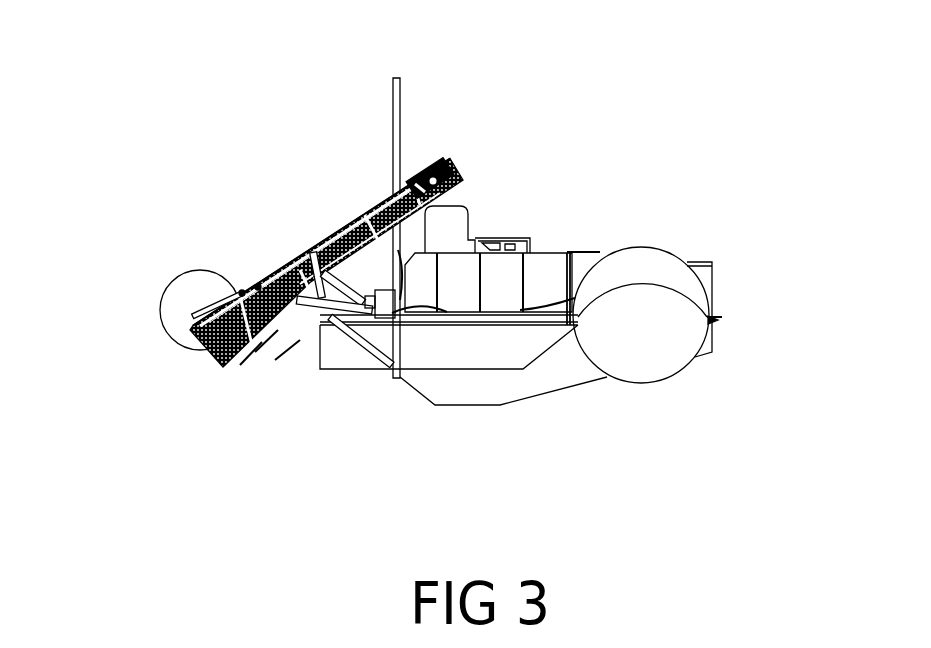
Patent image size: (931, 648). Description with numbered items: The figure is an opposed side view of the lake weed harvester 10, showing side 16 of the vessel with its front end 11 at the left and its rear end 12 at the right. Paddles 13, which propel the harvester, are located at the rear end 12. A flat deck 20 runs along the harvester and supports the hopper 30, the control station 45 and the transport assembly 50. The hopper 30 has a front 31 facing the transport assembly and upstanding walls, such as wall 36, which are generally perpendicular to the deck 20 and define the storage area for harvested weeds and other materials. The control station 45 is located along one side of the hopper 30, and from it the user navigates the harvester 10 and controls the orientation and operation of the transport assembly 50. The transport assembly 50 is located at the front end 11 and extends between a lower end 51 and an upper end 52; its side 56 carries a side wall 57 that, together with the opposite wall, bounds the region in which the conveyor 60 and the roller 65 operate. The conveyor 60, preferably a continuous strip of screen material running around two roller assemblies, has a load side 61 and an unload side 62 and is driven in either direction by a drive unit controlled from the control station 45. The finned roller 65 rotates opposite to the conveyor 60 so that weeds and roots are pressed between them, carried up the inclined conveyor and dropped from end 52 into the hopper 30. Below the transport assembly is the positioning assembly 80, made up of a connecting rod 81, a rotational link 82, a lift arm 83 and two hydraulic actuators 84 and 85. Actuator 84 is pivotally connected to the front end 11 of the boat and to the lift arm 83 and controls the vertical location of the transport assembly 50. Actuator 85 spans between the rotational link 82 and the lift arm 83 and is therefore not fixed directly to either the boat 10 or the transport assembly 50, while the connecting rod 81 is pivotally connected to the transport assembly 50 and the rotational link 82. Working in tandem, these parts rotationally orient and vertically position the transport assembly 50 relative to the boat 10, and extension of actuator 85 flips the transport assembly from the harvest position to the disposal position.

The harvester 10 is at (678, 89).
The end 11 is at (285, 352).
The end 12 is at (712, 285).
The paddles 13 is at (667, 383).
The side 16 is at (508, 352).
The deck 20 is at (322, 369).
The hopper 30 is at (585, 246).
The front 31 is at (400, 245).
The upstanding wall 36 is at (562, 252).
The control station 45 is at (543, 267).
The transport assembly 50 is at (352, 225).
The end 51 is at (212, 368).
The end 52 is at (440, 163).
The side 56 is at (240, 365).
The side wall 57 is at (258, 350).
The conveyor 60 is at (257, 287).
The load side 61 is at (242, 292).
The unload side 62 is at (385, 203).
The roller 65 is at (162, 297).
The positioning assembly 80 is at (372, 372).
The connecting rod 81 is at (276, 258).
The rotational link 82 is at (303, 263).
The lift arm 83 is at (298, 312).
The actuator 84 is at (357, 372).
The actuator 85 is at (398, 380).